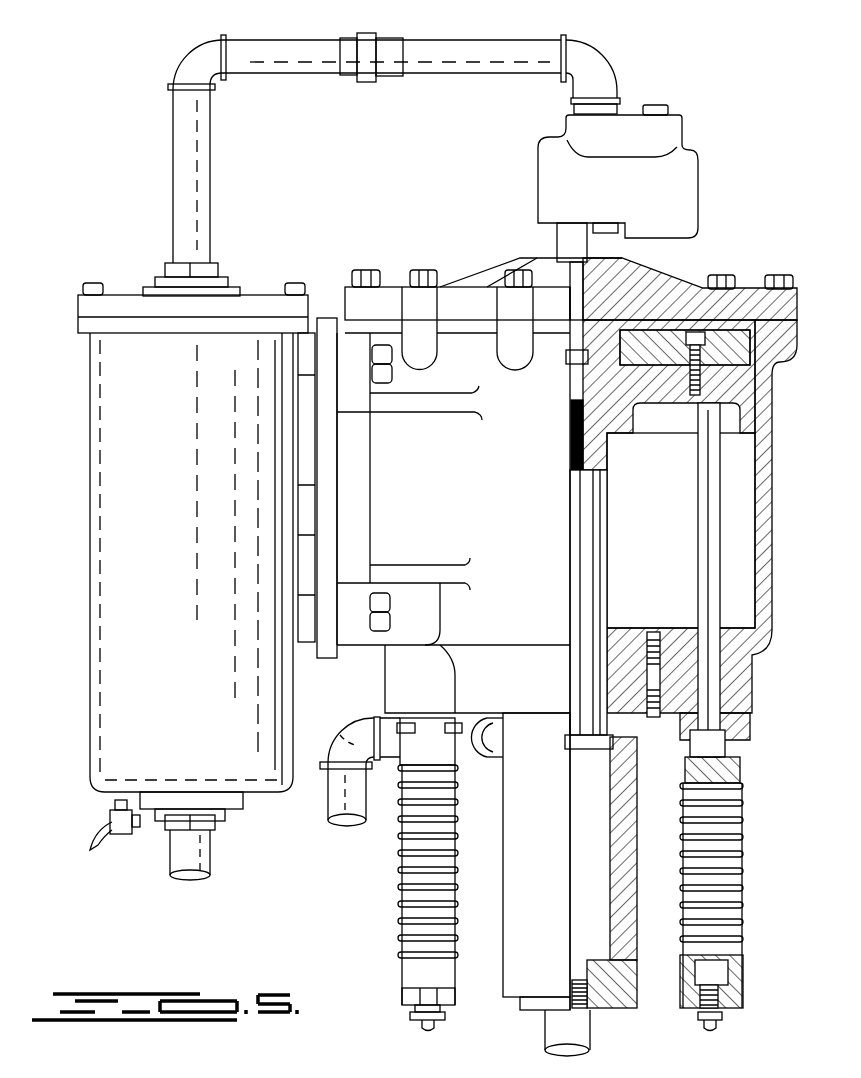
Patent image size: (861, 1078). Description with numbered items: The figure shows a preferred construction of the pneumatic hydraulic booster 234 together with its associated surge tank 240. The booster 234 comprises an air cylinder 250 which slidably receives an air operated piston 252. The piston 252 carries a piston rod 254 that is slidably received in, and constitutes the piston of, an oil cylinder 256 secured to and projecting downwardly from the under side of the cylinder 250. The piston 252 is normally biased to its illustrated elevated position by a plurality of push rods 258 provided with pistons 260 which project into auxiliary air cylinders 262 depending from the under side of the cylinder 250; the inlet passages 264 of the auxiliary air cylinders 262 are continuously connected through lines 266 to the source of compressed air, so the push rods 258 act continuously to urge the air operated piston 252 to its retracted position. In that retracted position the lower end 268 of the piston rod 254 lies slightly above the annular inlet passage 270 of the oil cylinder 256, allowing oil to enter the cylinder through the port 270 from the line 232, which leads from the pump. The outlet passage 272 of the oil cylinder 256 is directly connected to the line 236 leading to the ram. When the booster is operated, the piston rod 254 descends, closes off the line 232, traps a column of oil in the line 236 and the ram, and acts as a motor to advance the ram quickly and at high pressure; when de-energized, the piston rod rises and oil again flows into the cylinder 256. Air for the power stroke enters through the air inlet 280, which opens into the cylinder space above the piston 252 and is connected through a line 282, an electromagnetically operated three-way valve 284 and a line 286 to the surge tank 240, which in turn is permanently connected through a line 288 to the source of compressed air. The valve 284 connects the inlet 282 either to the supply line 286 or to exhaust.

The line 232 is at (490, 760).
The booster 234 is at (480, 526).
The line 236 is at (588, 1030).
The surge tank 240 is at (200, 527).
The cylinder 250 is at (760, 488).
The piston 252 is at (673, 395).
The piston rod 254 is at (598, 573).
The oil cylinder 256 is at (600, 855).
The push rods 258 is at (703, 525).
The pistons 260 is at (740, 735).
The auxiliary air cylinders 262 is at (457, 838).
The inlet passages 264 is at (420, 1010).
The lines 266 is at (437, 1030).
The lower end 268 is at (575, 731).
The annular inlet passage 270 is at (600, 750).
The outlet passage 272 is at (578, 965).
The air inlet 280 is at (622, 262).
The line 282 is at (556, 236).
The three-way valve 284 is at (681, 146).
The line 286 is at (468, 72).
The line 288 is at (212, 866).